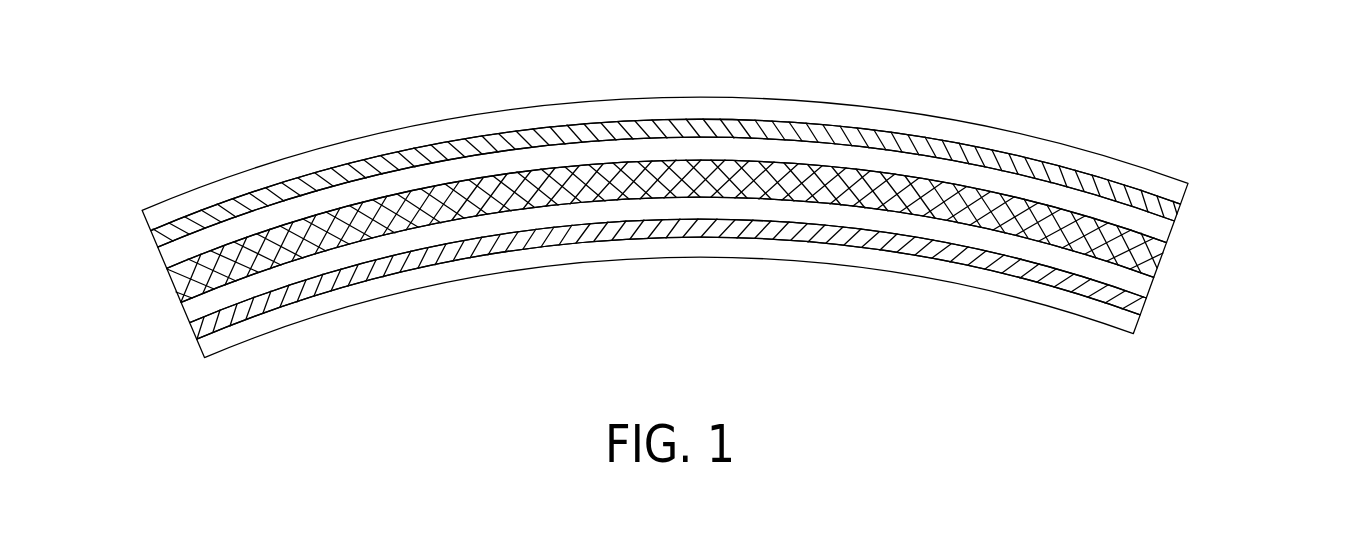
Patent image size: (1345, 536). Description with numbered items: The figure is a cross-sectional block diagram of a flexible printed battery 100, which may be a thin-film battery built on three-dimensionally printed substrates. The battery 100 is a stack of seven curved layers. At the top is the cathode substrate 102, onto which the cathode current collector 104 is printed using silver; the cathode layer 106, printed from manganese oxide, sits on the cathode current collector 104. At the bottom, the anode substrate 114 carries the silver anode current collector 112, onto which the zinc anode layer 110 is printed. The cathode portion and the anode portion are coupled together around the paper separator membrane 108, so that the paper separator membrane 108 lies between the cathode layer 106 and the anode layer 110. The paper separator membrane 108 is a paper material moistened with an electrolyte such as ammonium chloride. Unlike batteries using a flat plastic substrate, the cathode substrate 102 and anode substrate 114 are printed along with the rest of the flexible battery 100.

The flexible printed battery 100 is at (907, 82).
The cathode substrate 102 is at (1184, 198).
The cathode current collector 104 is at (1178, 217).
The cathode layer 106 is at (1169, 236).
The paper separator membrane 108 is at (1156, 274).
The anode layer 110 is at (1149, 289).
The anode current collector 112 is at (1144, 307).
The anode substrate 114 is at (1138, 331).